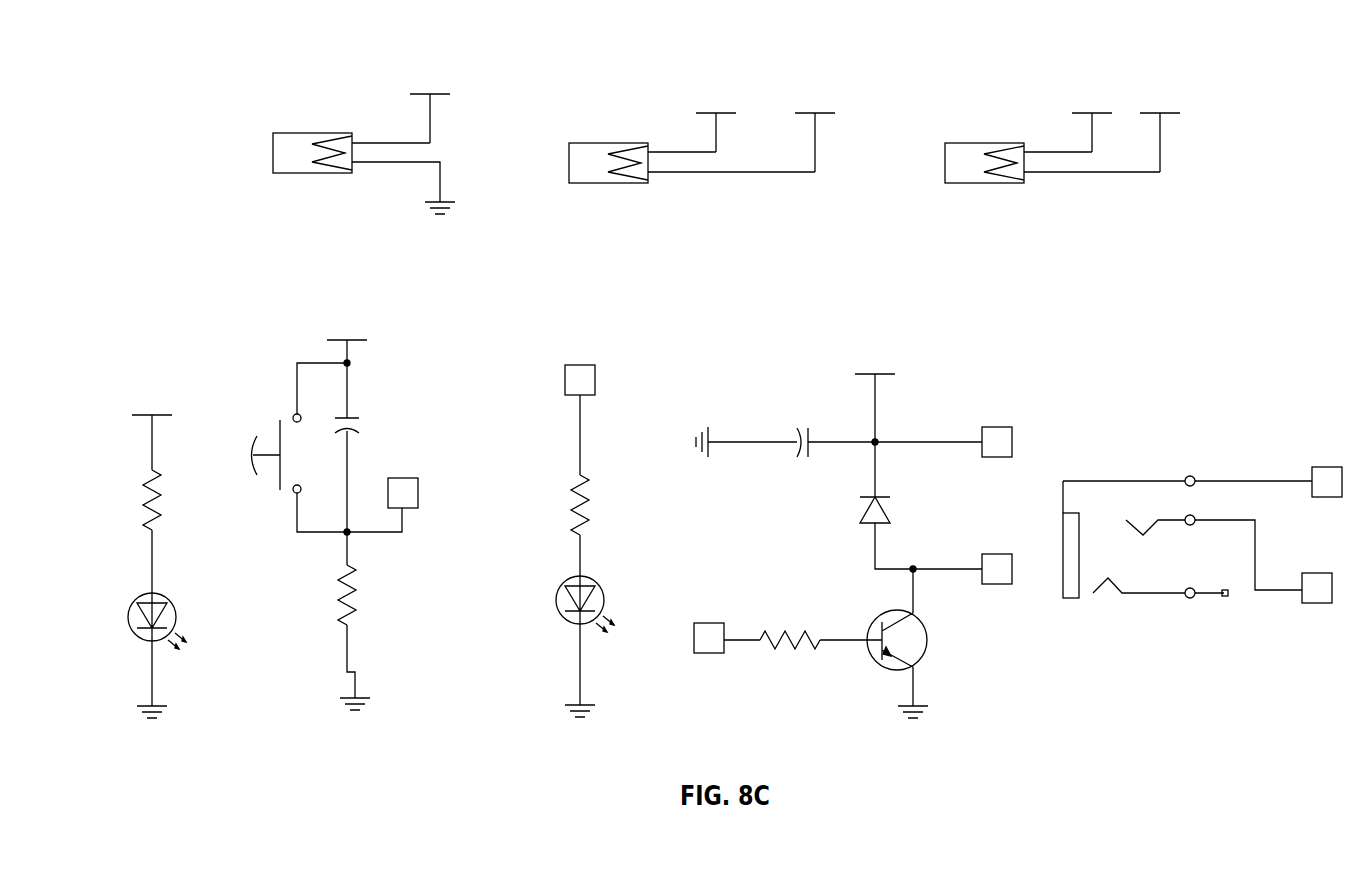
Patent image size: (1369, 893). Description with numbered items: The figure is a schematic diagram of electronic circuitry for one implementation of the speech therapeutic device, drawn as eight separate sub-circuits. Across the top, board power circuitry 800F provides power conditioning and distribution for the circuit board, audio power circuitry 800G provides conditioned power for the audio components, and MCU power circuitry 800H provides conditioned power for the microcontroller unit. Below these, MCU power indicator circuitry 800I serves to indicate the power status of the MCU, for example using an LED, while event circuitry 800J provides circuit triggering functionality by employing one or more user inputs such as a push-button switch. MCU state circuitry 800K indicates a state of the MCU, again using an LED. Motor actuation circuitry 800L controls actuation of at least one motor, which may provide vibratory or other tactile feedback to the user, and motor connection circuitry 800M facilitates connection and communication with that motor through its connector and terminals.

The board power circuitry 800F is at (299, 82).
The audio power circuitry 800G is at (655, 82).
The MCU power circuitry 800H is at (998, 82).
The MCU power indicator circuitry 800I is at (172, 358).
The event circuitry 800J is at (419, 345).
The MCU state circuitry 800K is at (607, 346).
The motor actuation circuitry 800L is at (995, 346).
The motor connection circuitry 800M is at (1267, 406).